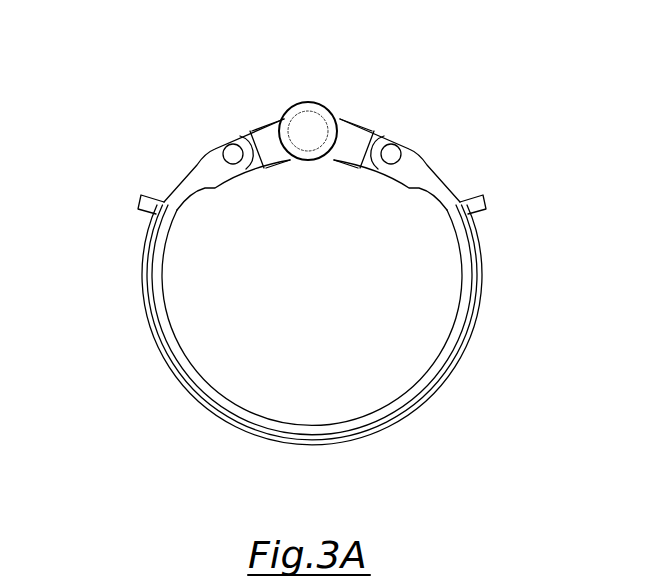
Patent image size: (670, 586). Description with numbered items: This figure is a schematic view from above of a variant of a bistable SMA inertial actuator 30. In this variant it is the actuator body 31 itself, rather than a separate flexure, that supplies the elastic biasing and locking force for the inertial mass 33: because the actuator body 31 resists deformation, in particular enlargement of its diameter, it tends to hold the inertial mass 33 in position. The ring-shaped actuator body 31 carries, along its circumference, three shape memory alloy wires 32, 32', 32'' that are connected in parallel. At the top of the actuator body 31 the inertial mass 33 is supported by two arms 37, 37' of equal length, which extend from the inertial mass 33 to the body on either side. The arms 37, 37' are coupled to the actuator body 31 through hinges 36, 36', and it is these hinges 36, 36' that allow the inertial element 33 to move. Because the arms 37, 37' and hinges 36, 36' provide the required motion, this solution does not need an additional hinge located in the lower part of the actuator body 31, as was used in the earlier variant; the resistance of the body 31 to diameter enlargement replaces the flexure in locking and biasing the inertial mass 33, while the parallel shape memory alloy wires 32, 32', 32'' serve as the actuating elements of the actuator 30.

The bistable SMA inertial actuator 30 is at (327, 272).
The actuator body 31 is at (199, 179).
The shape memory alloy wire 32 is at (249, 368).
The shape memory alloy wire 32' is at (312, 320).
The shape memory alloy wire 32'' is at (312, 325).
The inertial mass 33 is at (308, 128).
The hinge 36 is at (172, 96).
The hinge 36' is at (406, 98).
The arm 37 is at (261, 206).
The arm 37' is at (348, 206).